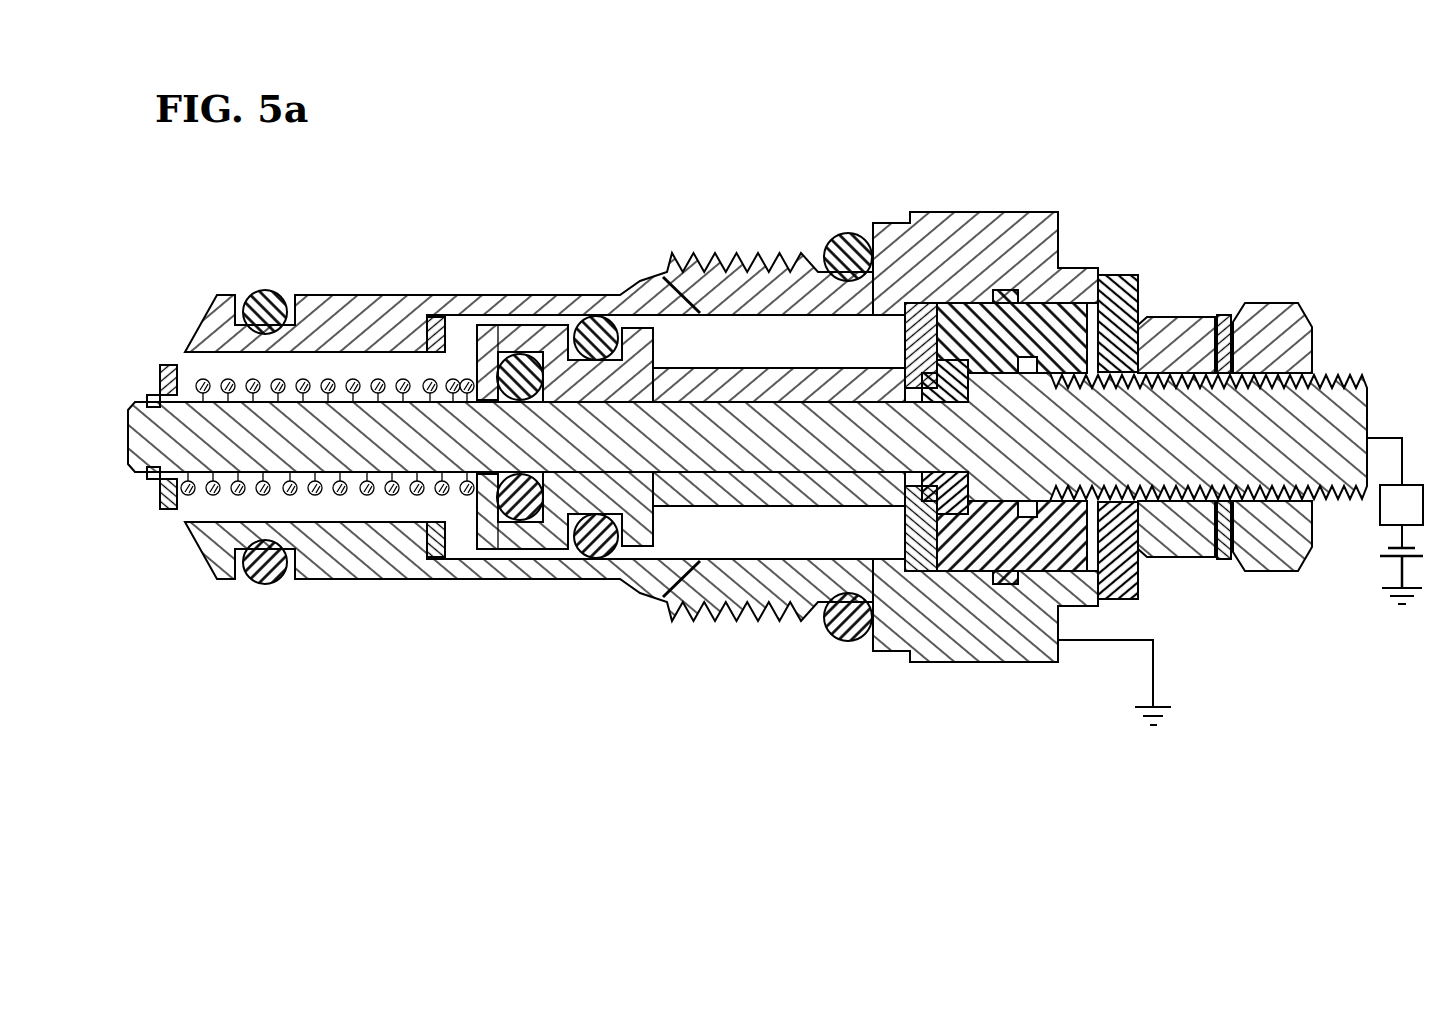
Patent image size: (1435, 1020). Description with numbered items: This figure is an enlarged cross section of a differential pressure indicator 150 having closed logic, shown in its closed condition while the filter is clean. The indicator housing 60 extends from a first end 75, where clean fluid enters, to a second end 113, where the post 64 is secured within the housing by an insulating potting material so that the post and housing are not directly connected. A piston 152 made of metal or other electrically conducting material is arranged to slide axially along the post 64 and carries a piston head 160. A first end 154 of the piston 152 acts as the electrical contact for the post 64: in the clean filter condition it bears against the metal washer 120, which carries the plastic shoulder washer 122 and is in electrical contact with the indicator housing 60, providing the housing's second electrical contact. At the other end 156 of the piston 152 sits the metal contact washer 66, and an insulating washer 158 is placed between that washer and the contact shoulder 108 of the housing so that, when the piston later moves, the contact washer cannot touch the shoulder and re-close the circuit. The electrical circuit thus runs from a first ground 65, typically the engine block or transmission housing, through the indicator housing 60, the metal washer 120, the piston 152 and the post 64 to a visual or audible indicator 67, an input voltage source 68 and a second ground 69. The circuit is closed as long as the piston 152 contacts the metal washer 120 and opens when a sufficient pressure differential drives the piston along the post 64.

The indicator housing 60 is at (935, 238).
The post 64 is at (658, 443).
The first ground 65 is at (1162, 705).
The metal contact washer 66 is at (487, 340).
The visual or audible indicator 67 is at (1408, 485).
The input voltage source 68 is at (1383, 553).
The second ground 69 is at (1388, 598).
The first end 75 is at (183, 348).
The contact shoulder 108 is at (350, 312).
The second end 113 is at (1092, 270).
The metal washer 120 is at (923, 545).
The plastic shoulder washer 122 is at (950, 510).
The differential pressure indicator 150 is at (781, 484).
The piston 152 is at (745, 513).
The first end 154 is at (897, 365).
The other end 156 is at (502, 547).
The insulating washer 158 is at (437, 330).
The piston head 160 is at (600, 320).